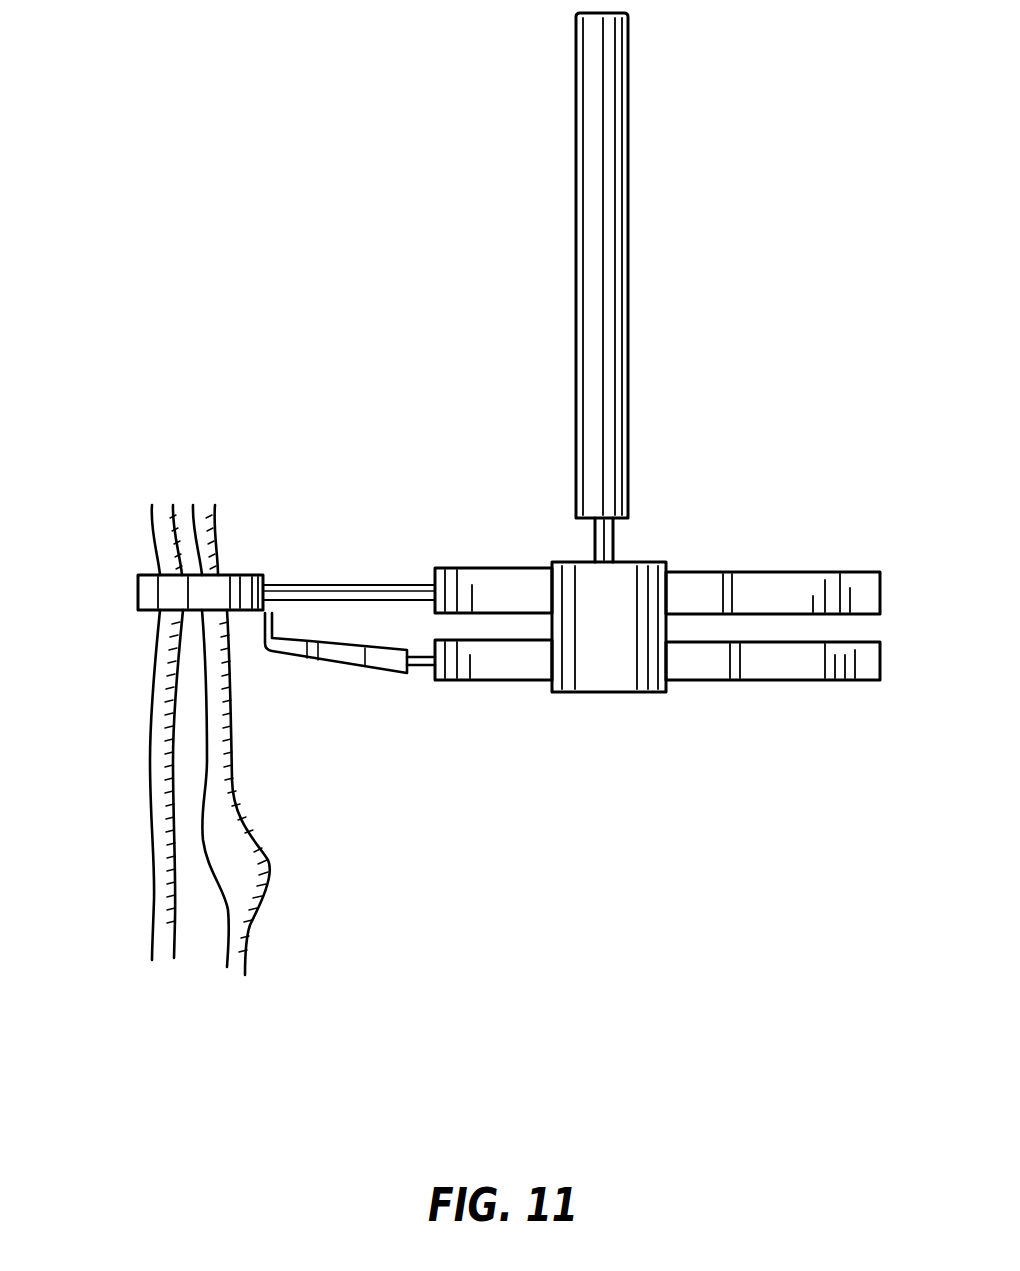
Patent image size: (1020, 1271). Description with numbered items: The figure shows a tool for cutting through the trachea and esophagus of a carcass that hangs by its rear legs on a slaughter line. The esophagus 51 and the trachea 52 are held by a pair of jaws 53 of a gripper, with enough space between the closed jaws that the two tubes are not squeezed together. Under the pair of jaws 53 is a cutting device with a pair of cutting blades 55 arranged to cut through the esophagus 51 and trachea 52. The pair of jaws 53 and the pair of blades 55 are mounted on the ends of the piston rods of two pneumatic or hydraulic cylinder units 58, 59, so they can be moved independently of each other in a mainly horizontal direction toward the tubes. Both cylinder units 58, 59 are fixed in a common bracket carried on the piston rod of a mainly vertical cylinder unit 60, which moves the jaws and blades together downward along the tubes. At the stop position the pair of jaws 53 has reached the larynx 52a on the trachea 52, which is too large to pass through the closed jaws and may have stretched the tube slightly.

The esophagus 51 is at (160, 924).
The trachea 52 is at (312, 769).
The larynx 52a is at (273, 873).
The pair of jaws 53 is at (243, 575).
The pair of cutting blades 55 is at (375, 657).
The cylinder unit 58 is at (793, 667).
The cylinder unit 59 is at (783, 590).
The vertical cylinder unit 60 is at (617, 230).